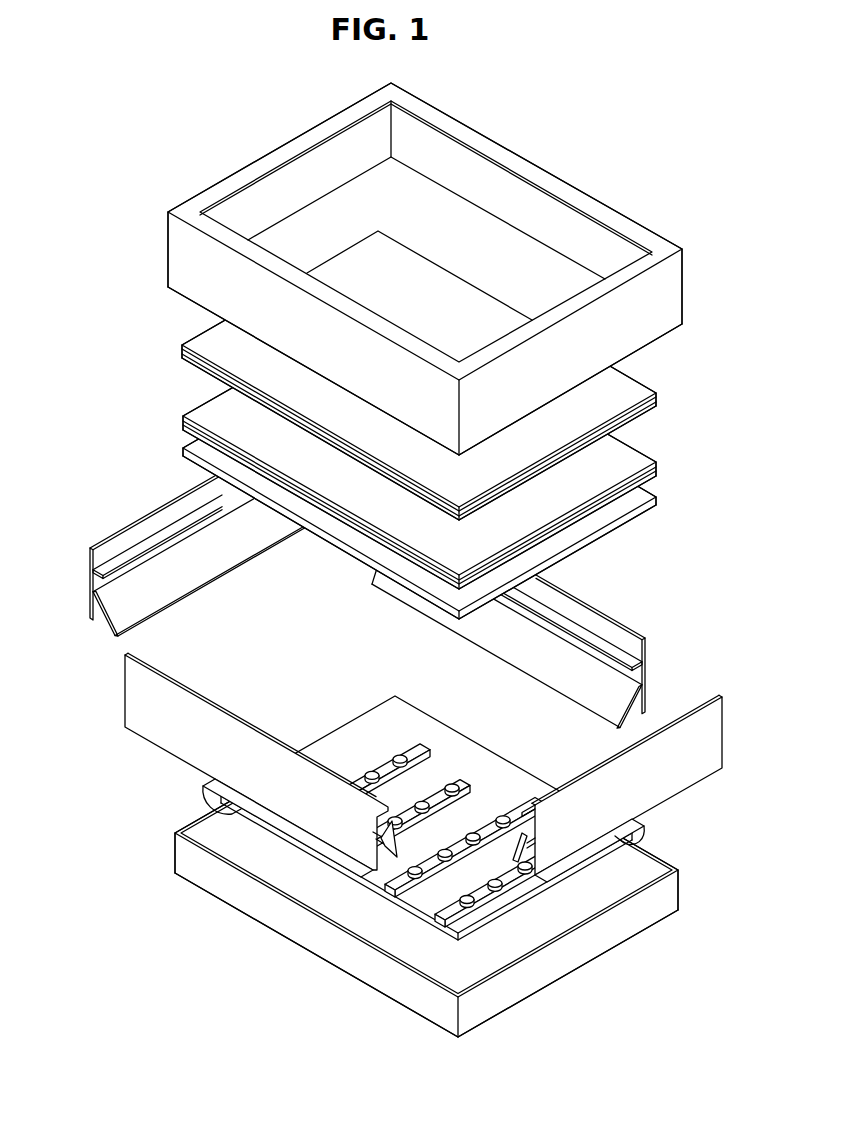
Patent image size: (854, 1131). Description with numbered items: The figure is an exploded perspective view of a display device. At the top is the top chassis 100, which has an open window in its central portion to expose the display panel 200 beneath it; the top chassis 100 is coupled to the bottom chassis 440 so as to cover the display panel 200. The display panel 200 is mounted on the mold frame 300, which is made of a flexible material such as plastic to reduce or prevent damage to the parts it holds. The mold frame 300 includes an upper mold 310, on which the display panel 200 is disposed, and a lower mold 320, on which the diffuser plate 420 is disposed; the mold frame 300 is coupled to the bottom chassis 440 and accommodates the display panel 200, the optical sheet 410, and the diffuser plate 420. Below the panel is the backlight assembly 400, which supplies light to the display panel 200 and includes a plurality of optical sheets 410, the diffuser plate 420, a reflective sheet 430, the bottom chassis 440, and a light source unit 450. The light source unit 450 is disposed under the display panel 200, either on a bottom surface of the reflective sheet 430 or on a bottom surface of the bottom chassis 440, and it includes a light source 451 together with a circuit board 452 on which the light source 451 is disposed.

The top chassis 100 is at (188, 257).
The display panel 200 is at (200, 332).
The mold frame 300 is at (415, 600).
The upper mold 310 is at (629, 651).
The lower mold 320 is at (624, 695).
The backlight assembly 400 is at (373, 693).
The optical sheet 410 is at (172, 417).
The diffuser plate 420 is at (193, 447).
The reflective sheet 430 is at (212, 822).
The bottom chassis 440 is at (188, 853).
The light source unit 450 is at (442, 913).
The light source 451 is at (412, 866).
The circuit board 452 is at (452, 910).